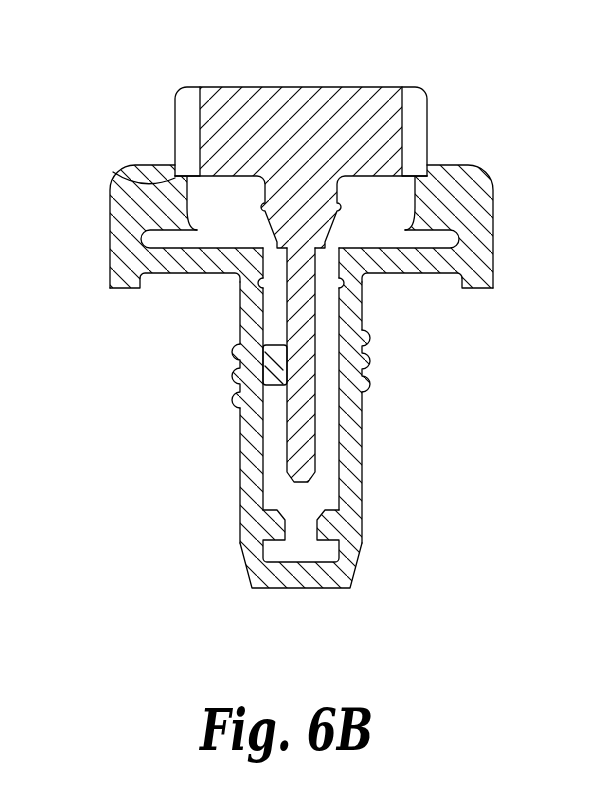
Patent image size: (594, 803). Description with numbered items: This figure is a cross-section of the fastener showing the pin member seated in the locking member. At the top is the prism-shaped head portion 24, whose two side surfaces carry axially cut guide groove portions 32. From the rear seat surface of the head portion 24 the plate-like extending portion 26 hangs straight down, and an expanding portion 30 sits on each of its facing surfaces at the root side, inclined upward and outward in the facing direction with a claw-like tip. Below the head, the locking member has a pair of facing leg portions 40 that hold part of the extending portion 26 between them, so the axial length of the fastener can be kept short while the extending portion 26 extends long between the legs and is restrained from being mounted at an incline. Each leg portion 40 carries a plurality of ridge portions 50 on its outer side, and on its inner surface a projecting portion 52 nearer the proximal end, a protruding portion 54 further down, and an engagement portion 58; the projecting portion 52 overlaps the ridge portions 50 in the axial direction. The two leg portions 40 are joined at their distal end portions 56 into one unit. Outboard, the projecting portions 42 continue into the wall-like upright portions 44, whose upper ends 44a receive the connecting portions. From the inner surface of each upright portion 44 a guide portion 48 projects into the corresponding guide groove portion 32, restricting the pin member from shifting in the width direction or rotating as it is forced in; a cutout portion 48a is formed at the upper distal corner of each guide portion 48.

The head portion 24 is at (290, 107).
The extending portion 26 is at (290, 407).
The expanding portion 30 is at (250, 215).
The guide groove portion 32 is at (185, 110).
The leg portion 40 is at (253, 463).
The projecting portion 42 is at (190, 267).
The upright portion 44 is at (130, 218).
The upper end 44a is at (127, 292).
The guide portion 48 is at (172, 205).
The cutout portion 48a is at (113, 172).
The ridge portion 50 is at (232, 398).
The projecting portion 52 is at (273, 360).
The protruding portion 54 is at (277, 528).
The distal end portion 56 is at (302, 573).
The engagement portion 58 is at (256, 285).